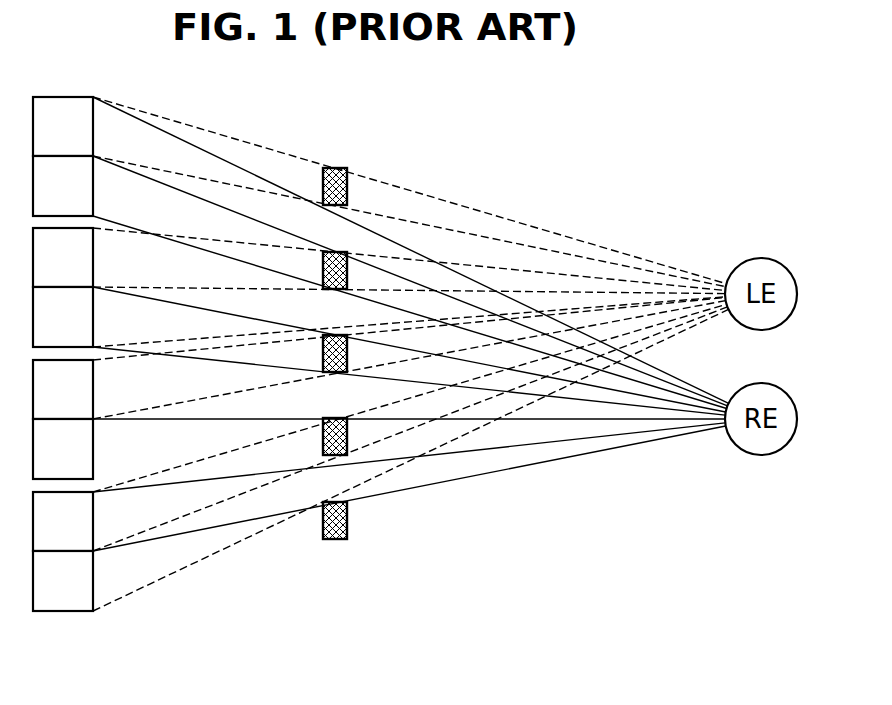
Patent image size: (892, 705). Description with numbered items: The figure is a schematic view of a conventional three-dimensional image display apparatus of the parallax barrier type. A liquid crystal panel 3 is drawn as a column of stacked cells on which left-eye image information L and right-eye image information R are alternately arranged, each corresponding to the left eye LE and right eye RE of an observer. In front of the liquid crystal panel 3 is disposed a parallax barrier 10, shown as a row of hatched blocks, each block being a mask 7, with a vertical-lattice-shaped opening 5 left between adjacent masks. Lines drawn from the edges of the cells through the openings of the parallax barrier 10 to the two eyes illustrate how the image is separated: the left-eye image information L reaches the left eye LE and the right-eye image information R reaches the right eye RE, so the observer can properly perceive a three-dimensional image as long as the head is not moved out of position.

The liquid crystal panel 3 is at (68, 611).
The opening 5 is at (328, 486).
The mask 7 is at (322, 527).
The parallax barrier 10 is at (348, 402).